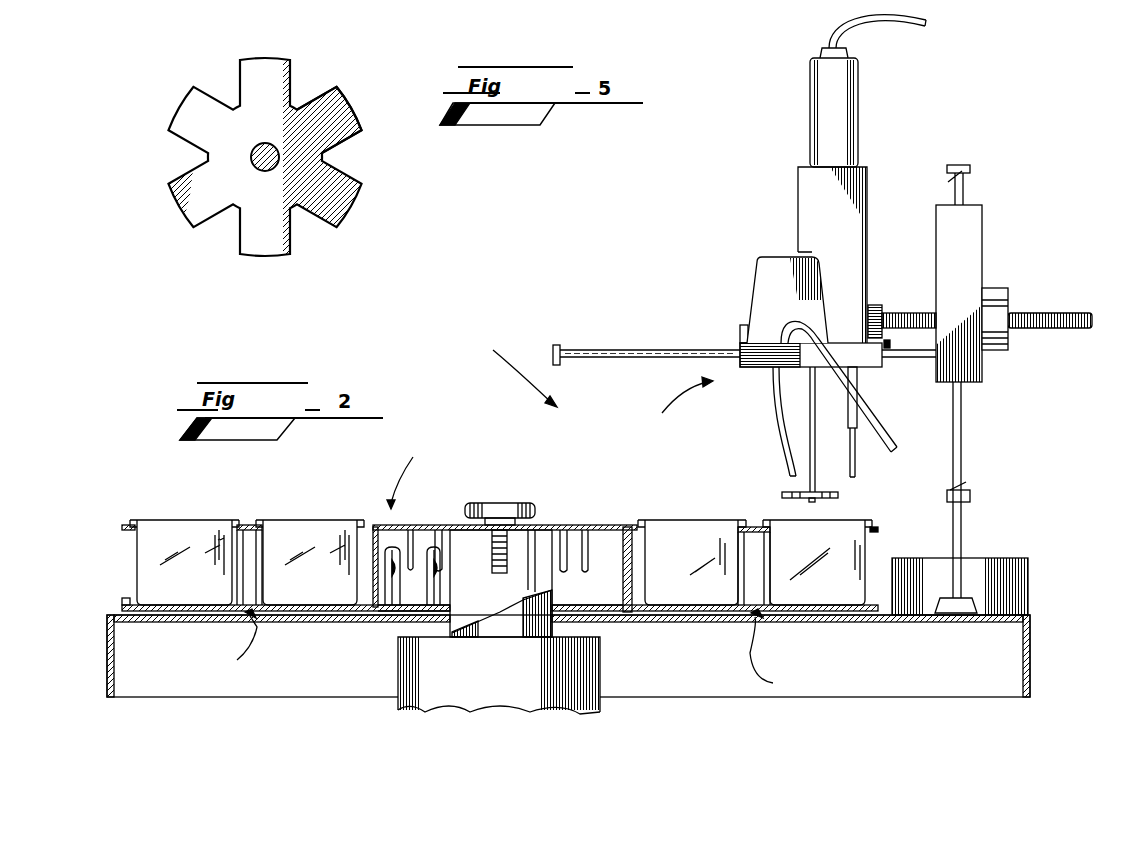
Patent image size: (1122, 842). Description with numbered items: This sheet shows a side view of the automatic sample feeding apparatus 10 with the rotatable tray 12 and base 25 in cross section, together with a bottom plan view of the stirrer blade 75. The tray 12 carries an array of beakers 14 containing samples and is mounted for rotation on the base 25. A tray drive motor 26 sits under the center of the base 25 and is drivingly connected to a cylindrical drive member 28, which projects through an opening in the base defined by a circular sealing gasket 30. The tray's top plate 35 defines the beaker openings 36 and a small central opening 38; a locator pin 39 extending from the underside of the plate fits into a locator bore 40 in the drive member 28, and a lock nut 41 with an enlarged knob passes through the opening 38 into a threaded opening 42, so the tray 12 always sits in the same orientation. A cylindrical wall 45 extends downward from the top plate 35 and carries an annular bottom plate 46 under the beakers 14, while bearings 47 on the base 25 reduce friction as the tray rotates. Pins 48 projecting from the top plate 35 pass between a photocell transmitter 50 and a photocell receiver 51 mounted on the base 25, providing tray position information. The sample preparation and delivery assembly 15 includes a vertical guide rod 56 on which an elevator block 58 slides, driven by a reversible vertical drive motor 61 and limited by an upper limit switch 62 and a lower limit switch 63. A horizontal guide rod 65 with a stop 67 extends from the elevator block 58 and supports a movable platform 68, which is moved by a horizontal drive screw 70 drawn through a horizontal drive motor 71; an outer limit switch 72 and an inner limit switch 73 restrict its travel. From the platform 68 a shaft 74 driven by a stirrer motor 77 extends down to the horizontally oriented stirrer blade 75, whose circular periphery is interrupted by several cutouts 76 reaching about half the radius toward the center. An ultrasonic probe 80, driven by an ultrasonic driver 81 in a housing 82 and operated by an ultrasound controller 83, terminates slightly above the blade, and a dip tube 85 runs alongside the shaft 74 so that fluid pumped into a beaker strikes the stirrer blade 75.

In FIG. 2, the automatic sample feeding apparatus 10 is at (513, 368).
In FIG. 2, the rotatable tray 12 is at (407, 470).
In FIG. 2, the beakers 14 is at (173, 518).
In FIG. 2, the sample preparation and delivery assembly 15 is at (674, 402).
In FIG. 2, the base 25 is at (107, 636).
In FIG. 2, the tray drive motor 26 is at (600, 700).
In FIG. 2, the cylindrical drive member 28 is at (498, 633).
In FIG. 2, the circular sealing gasket 30 is at (558, 610).
In FIG. 2, the top plate 35 is at (442, 530).
In FIG. 2, the beaker openings 36 is at (236, 530).
In FIG. 2, the central opening 38 is at (488, 535).
In FIG. 2, the locator pin 39 is at (520, 567).
In FIG. 2, the locator bore 40 is at (527, 533).
In FIG. 2, the lock nut 41 is at (497, 502).
In FIG. 2, the threaded opening 42 is at (500, 580).
In FIG. 2, the cylindrical wall 45 is at (383, 537).
In FIG. 2, the annular bottom plate 46 is at (130, 600).
In FIG. 2, the bearings 47 is at (504, 646).
In FIG. 2, the pins 48 is at (563, 540).
In FIG. 2, the photocell transmitter 50 is at (387, 618).
In FIG. 2, the photocell receiver 51 is at (432, 548).
In FIG. 2, the vertical guide rod 56 is at (967, 420).
In FIG. 2, the elevator block 58 is at (972, 237).
In FIG. 2, the reversible vertical drive motor 61 is at (1030, 588).
In FIG. 2, the upper limit switch 62 is at (972, 172).
In FIG. 2, the lower limit switch 63 is at (963, 502).
In FIG. 2, the horizontal guide rod 65 is at (670, 348).
In FIG. 2, the stop 67 is at (553, 347).
In FIG. 2, the movable platform 68 is at (740, 370).
In FIG. 2, the horizontal drive screw 70 is at (905, 310).
In FIG. 2, the horizontal drive motor 71 is at (997, 290).
In FIG. 2, the outer limit switch 72 is at (890, 350).
In FIG. 2, the inner limit switch 73 is at (730, 335).
In FIG. 5, the shaft 74 is at (250, 150).
In FIG. 2, the shaft 74 is at (815, 398).
In FIG. 5, the stirrer blade 75 is at (338, 123).
In FIG. 2, the stirrer blade 75 is at (790, 483).
In FIG. 5, the cutouts 76 is at (355, 135).
In FIG. 2, the stirrer motor 77 is at (768, 270).
In FIG. 2, the ultrasonic probe 80 is at (857, 457).
In FIG. 2, the ultrasonic driver 81 is at (857, 130).
In FIG. 2, the housing 82 is at (848, 217).
In FIG. 2, the ultrasound controller 83 is at (923, 23).
In FIG. 2, the dip tube 85 is at (767, 413).